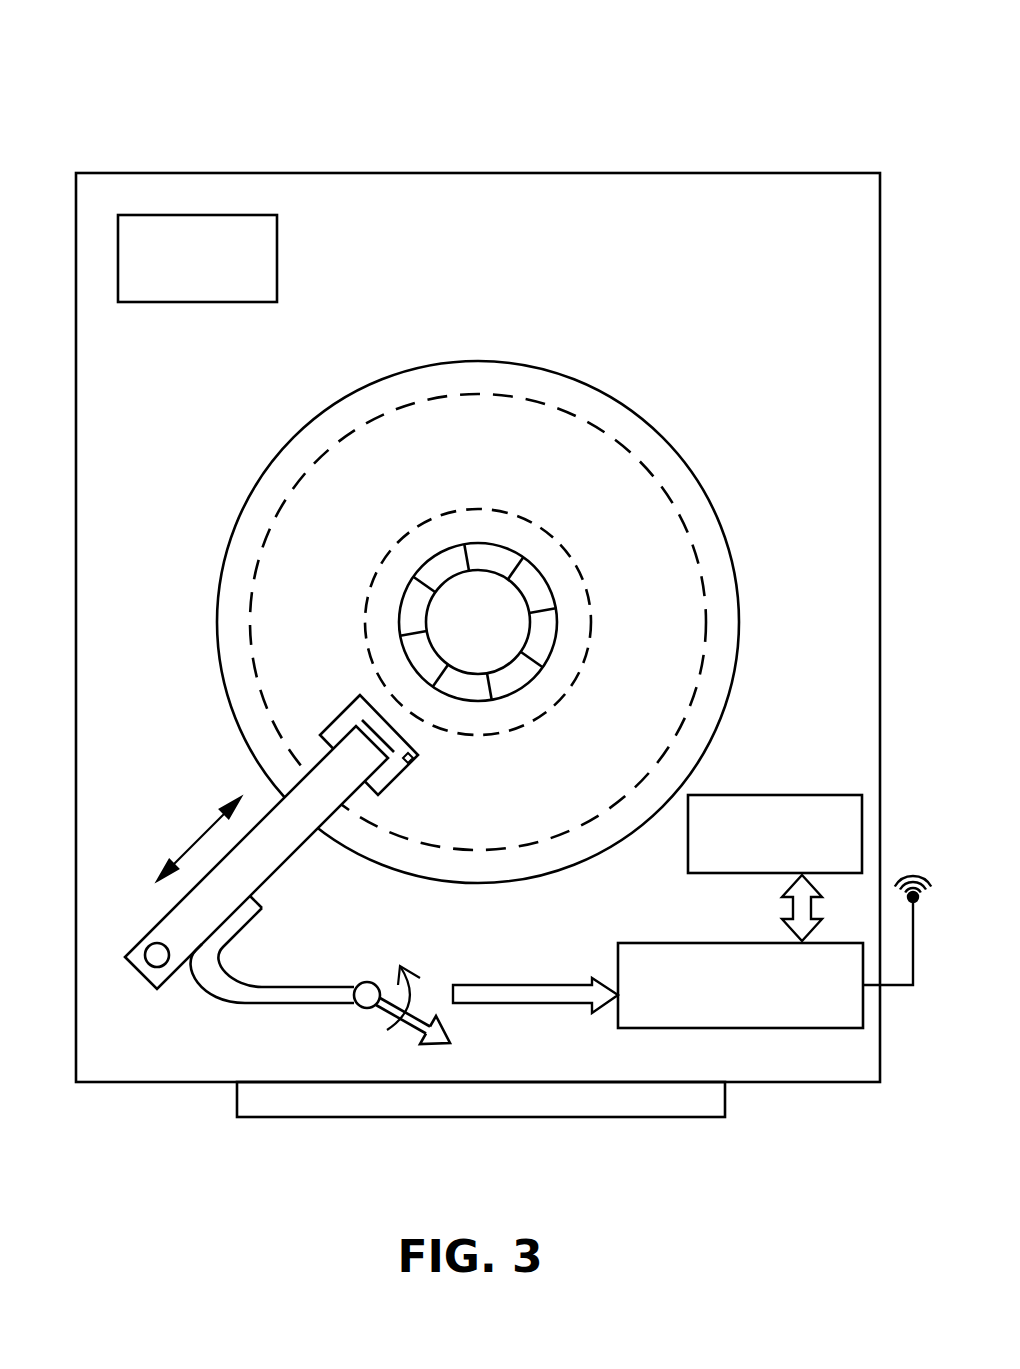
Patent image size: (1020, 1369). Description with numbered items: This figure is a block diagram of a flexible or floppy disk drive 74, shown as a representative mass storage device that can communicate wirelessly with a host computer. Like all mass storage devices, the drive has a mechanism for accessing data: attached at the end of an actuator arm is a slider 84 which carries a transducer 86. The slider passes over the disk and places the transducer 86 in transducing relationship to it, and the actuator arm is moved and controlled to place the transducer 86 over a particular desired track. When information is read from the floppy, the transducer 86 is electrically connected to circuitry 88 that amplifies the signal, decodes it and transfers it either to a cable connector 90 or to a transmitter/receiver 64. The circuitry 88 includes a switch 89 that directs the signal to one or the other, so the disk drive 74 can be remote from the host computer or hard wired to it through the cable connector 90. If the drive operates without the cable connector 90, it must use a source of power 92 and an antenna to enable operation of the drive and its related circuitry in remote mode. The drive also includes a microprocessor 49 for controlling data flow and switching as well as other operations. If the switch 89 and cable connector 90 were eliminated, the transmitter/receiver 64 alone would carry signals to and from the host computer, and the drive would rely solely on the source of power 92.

The flexible disk drive 74 is at (625, 76).
The source of power 92 is at (278, 250).
The slider 84 is at (332, 721).
The transducer 86 is at (413, 760).
The circuitry 88 is at (250, 1004).
The switch 89 is at (410, 1028).
The microprocessor 49 is at (806, 794).
The transmitter/receiver 64 is at (618, 957).
The cable connector 90 is at (542, 1118).